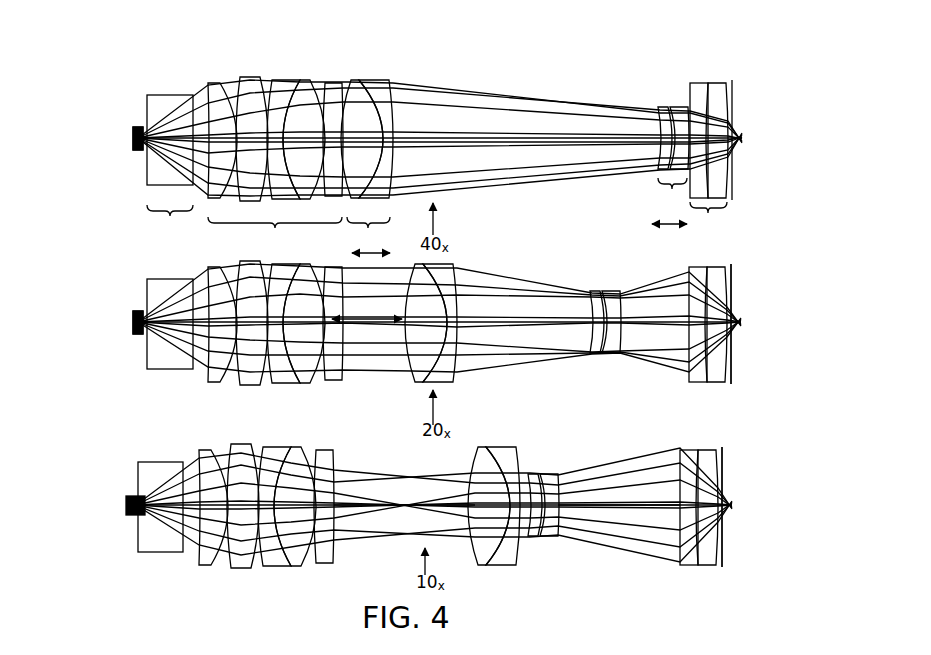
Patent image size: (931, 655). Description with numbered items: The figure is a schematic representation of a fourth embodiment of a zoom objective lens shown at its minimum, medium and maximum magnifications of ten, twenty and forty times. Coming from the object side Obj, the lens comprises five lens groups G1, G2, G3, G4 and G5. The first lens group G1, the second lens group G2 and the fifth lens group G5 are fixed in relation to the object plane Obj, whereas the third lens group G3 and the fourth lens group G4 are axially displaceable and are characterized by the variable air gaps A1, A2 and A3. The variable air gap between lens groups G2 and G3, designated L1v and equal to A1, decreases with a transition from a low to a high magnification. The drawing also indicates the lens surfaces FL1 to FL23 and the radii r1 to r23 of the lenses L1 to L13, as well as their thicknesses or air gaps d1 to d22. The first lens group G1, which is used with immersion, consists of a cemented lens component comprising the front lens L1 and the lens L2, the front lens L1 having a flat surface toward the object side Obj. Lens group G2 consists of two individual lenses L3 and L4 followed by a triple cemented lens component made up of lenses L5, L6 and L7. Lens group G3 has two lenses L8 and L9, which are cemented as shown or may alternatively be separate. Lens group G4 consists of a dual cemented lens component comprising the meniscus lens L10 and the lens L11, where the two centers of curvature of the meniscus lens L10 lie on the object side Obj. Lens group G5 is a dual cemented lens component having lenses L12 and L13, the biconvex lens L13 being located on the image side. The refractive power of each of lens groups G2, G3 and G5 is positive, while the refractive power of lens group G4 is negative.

The object side Obj is at (61, 115).
The front lens L1 is at (141, 125).
The lens L2 is at (166, 93).
The lens L3 is at (213, 82).
The lens L4 is at (246, 77).
The lens L5 is at (287, 80).
The lens L6 is at (308, 85).
The lens L7 is at (345, 85).
The lens L8 is at (365, 85).
The lens L9 is at (386, 84).
The meniscus lens L10 is at (660, 110).
The lens L11 is at (678, 118).
The lens L12 is at (700, 95).
The biconvex lens L13 is at (733, 92).
The first lens surface FL1 is at (132, 146).
The last lens surface FL23 is at (735, 138).
The first lens group G1 is at (170, 220).
The second lens group G2 is at (275, 234).
The third lens group G3 is at (368, 235).
The fourth lens group G4 is at (669, 201).
The fifth lens group G5 is at (708, 219).
The first radius r1 is at (132, 326).
The last radius r23 is at (735, 322).
The variable air gap L1v is at (368, 330).
The first thickness d1 is at (133, 520).
The last thickness or air gap d22 is at (707, 500).
The first variable air gap A1 is at (377, 522).
The second variable air gap A2 is at (523, 540).
The third variable air gap A3 is at (621, 522).